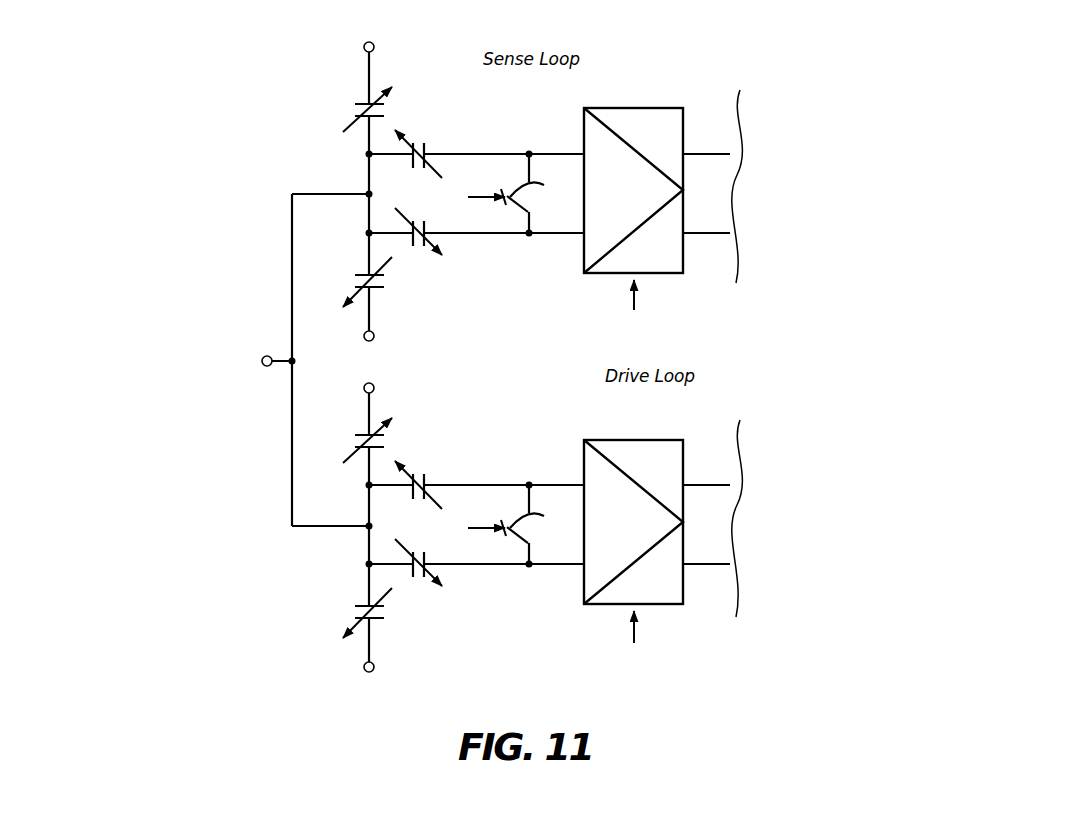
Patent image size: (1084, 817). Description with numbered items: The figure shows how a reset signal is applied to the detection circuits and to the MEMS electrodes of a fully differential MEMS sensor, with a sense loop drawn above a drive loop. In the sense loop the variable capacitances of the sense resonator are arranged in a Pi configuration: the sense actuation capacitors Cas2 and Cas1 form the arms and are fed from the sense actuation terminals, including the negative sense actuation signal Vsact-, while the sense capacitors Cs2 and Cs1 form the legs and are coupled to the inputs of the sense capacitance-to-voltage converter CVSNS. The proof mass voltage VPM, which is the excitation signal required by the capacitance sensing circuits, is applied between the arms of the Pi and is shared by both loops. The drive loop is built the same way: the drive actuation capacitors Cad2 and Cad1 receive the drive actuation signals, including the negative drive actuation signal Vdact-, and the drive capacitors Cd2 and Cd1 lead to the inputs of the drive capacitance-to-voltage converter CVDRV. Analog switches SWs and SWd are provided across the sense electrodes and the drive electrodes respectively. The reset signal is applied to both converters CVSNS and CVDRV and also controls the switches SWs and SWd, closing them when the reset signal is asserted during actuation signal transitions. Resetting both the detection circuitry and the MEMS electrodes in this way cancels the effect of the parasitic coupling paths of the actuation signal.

The proof mass voltage VPM is at (259, 360).
The negative sense actuation signal Vsact- is at (396, 335).
The second sense actuation capacitor Cas2 is at (358, 101).
The first sense actuation capacitor Cas1 is at (361, 273).
The sense capacitor Cs2 is at (475, 147).
The sense capacitor Cs1 is at (475, 244).
The analog switch SWs is at (502, 194).
The sense capacitance-to-voltage converter CVSNS is at (663, 213).
The negative drive actuation signal Vdact- is at (397, 664).
The second drive actuation capacitor Cad2 is at (358, 431).
The first drive actuation capacitor Cad1 is at (361, 604).
The drive capacitor Cd2 is at (475, 478).
The drive capacitor Cd1 is at (475, 573).
The analog switch SWd is at (503, 525).
The drive capacitance-to-voltage converter CVDRV is at (663, 544).